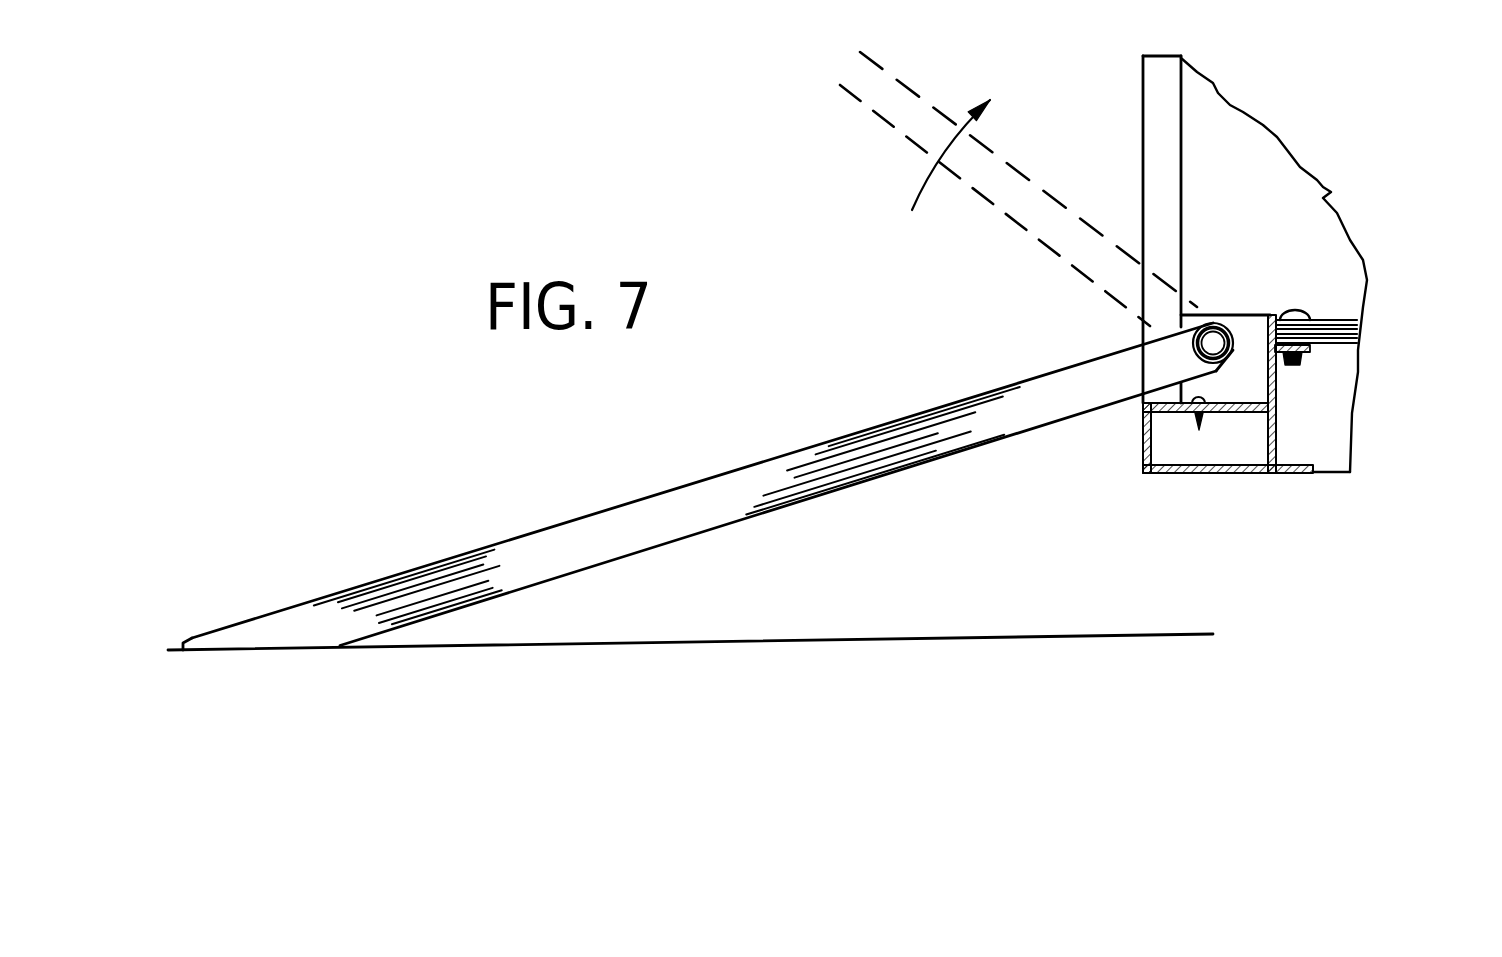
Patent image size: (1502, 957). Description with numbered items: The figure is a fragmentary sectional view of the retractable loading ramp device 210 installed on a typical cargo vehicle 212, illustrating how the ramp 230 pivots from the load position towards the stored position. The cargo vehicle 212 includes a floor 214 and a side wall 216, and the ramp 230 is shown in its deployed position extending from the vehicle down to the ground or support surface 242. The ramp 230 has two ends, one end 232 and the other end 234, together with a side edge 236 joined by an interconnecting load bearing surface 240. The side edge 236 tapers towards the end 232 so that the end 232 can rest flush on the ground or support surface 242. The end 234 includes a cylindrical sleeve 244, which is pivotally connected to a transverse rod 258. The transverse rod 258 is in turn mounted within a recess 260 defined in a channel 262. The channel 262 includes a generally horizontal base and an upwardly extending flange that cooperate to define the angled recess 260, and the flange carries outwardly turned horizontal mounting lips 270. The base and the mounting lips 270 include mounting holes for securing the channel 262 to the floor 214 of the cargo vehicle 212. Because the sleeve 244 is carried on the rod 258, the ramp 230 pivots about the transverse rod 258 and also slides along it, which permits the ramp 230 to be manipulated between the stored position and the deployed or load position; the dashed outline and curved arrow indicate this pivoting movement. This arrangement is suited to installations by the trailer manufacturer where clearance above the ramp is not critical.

The retractable loading ramp device 210 is at (705, 222).
The cargo vehicle 212 is at (1140, 443).
The floor 214 is at (1338, 317).
The side wall 216 is at (1253, 182).
The ramp 230 is at (806, 432).
The end 232 is at (192, 638).
The end 234 is at (1192, 307).
The side edge 236 is at (682, 513).
The load bearing surface 240 is at (648, 500).
The ground or support surface 242 is at (895, 634).
The cylindrical sleeve 244 is at (1213, 308).
The transverse rod 258 is at (1280, 312).
The recess 260 is at (1240, 377).
The channel 262 is at (1228, 406).
The horizontal mounting lip 270 is at (1308, 315).